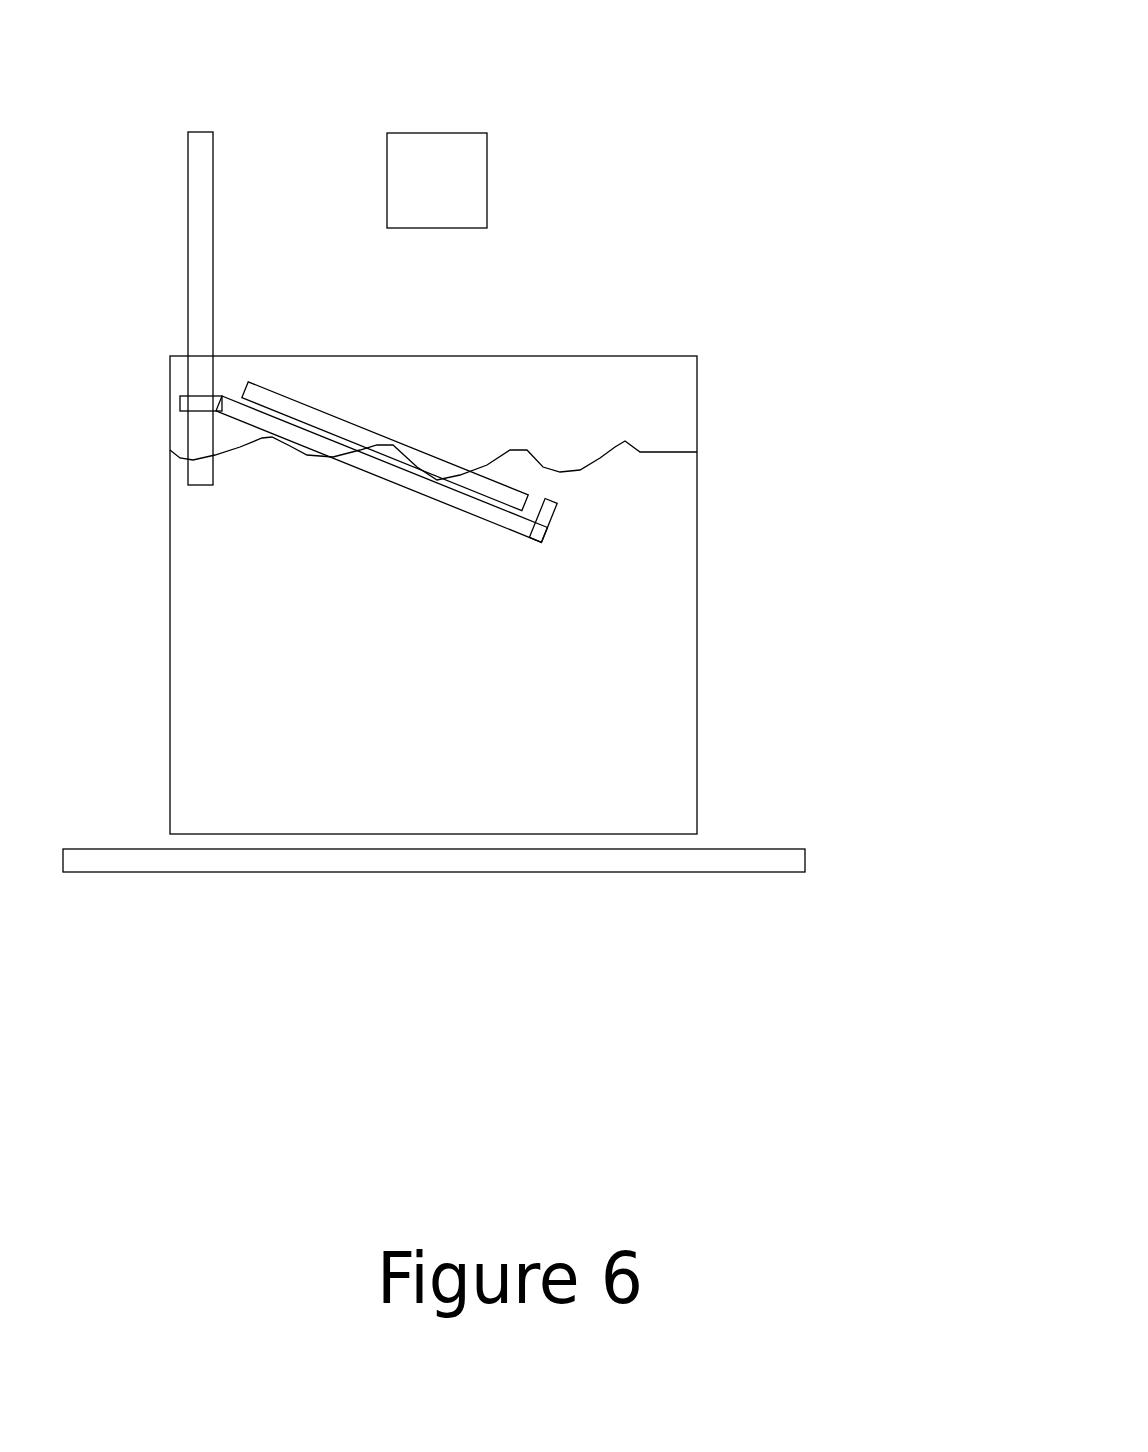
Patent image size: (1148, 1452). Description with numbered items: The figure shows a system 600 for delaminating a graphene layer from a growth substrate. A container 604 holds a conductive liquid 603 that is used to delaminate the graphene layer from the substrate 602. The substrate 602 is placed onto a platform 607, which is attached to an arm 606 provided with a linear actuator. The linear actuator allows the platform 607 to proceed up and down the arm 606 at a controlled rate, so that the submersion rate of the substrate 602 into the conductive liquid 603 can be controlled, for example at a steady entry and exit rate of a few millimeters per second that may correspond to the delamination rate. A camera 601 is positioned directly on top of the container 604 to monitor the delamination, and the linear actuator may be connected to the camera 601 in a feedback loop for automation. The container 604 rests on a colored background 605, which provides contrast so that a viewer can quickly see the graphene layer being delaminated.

The system 600 is at (786, 54).
The camera 601 is at (490, 207).
The substrate 602 is at (336, 405).
The conductive liquid 603 is at (682, 504).
The container 604 is at (704, 748).
The colored background 605 is at (795, 846).
The arm 606 is at (230, 194).
The platform 607 is at (559, 536).